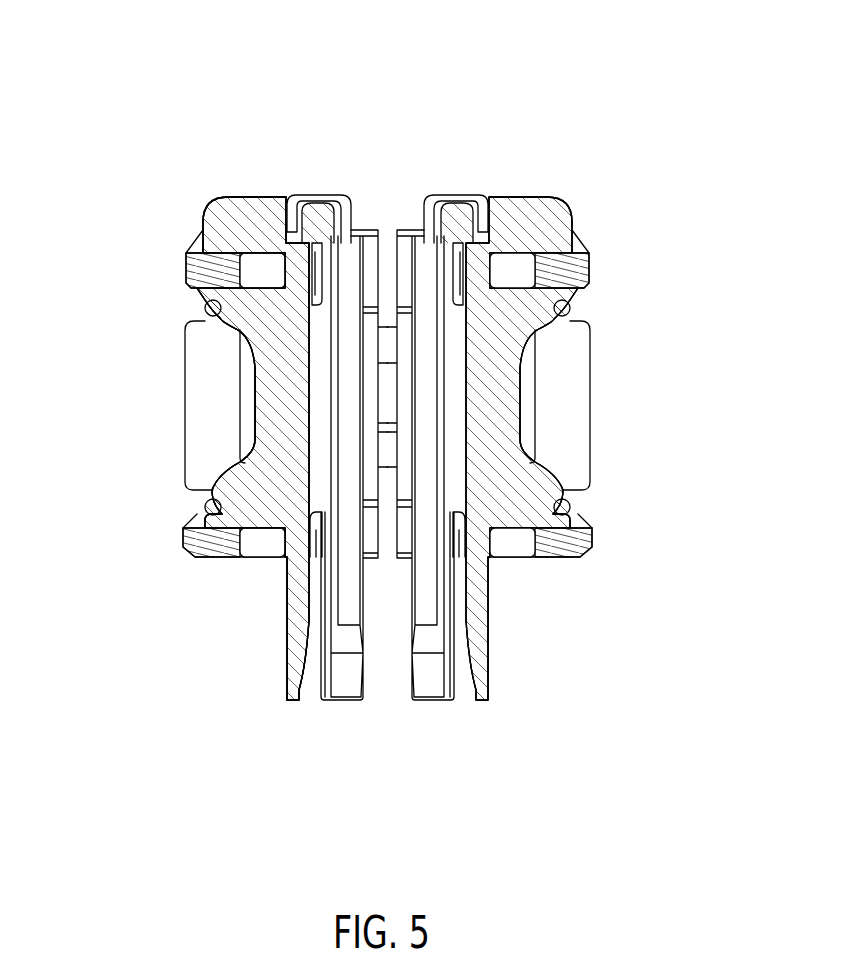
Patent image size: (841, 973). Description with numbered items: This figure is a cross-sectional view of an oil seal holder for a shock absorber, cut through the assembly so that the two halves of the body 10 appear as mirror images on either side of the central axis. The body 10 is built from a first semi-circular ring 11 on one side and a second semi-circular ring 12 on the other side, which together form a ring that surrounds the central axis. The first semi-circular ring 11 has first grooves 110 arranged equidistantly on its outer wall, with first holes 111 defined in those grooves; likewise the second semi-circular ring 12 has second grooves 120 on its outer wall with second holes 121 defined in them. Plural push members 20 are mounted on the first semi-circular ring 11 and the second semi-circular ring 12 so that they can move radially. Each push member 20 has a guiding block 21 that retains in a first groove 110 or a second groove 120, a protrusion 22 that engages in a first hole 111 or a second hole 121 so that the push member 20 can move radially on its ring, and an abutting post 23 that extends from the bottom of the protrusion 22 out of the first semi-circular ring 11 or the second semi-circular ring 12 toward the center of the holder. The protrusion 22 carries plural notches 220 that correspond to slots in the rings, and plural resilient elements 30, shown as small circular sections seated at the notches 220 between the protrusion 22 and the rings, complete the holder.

The body 10 is at (170, 126).
The first semi-circular ring 11 is at (193, 262).
The second semi-circular ring 12 is at (588, 272).
The push member 20 is at (271, 207).
The guiding block 21 is at (225, 213).
The protrusion 22 is at (265, 432).
The abutting post 23 is at (297, 603).
The resilient element 30 is at (210, 318).
The first groove 110 is at (200, 243).
The first hole 111 is at (248, 403).
The second groove 120 is at (577, 240).
The second hole 121 is at (531, 403).
The notch 220 is at (204, 300).